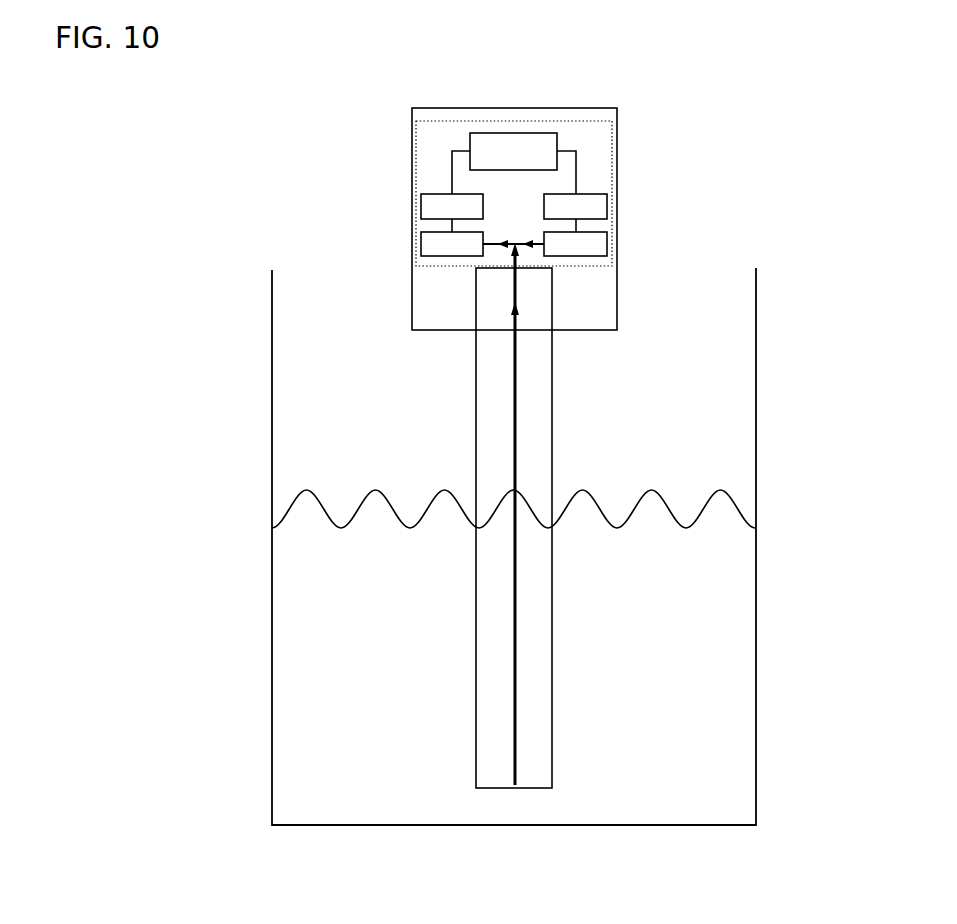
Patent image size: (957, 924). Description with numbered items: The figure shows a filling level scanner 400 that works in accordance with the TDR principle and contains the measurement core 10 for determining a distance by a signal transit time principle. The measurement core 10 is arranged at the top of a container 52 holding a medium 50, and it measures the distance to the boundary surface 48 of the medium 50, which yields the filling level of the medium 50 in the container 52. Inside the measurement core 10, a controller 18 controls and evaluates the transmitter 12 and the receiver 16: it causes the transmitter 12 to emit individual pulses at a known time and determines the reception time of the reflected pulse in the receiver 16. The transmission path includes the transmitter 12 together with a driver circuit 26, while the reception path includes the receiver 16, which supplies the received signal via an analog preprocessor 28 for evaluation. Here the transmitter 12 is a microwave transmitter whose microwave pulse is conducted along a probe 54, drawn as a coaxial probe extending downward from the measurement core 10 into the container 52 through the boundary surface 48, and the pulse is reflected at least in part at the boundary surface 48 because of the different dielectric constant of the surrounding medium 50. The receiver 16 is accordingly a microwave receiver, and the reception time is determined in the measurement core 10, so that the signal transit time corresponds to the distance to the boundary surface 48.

The filling level scanner 400 is at (677, 117).
The measurement core 10 is at (607, 157).
The controller 18 is at (487, 133).
The analog preprocessor 28 is at (433, 207).
The receiver 16 is at (433, 243).
The driver circuit 26 is at (596, 204).
The transmitter 12 is at (594, 257).
The probe 54 is at (553, 422).
The container 52 is at (757, 410).
The boundary surface 48 is at (742, 505).
The medium 50 is at (705, 640).